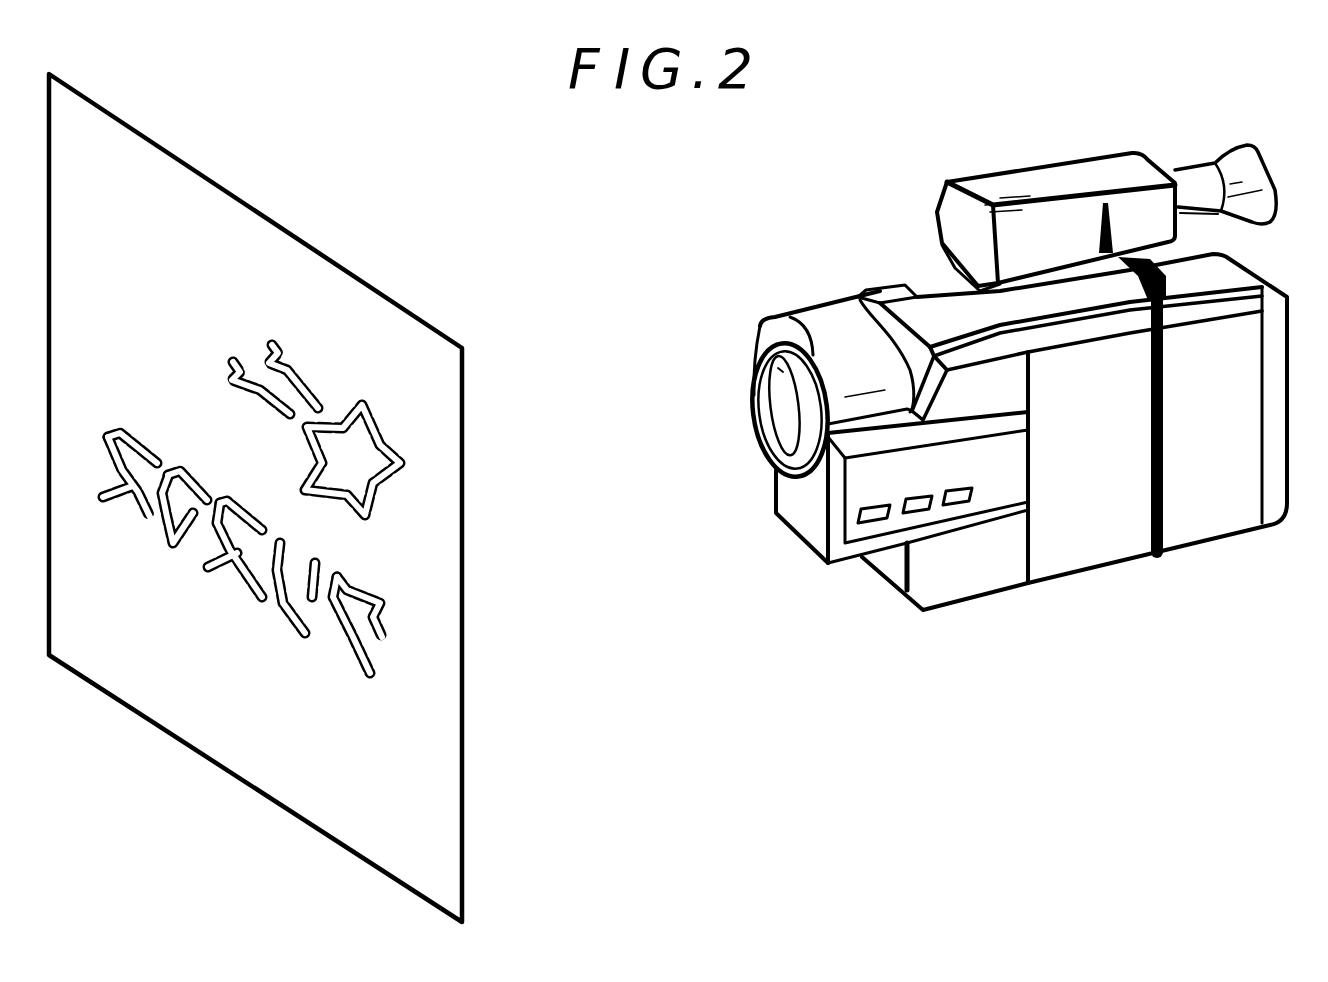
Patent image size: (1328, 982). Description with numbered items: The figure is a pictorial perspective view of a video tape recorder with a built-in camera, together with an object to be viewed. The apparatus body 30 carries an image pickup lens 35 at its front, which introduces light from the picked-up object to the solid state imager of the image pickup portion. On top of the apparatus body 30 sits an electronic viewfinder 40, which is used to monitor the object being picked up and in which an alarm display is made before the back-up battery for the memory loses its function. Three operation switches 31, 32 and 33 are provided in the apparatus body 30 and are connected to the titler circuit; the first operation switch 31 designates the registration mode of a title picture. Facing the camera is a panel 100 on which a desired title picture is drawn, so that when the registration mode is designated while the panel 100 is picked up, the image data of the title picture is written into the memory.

The panel 100 is at (465, 770).
The apparatus body 30 is at (986, 394).
The electronic viewfinder 40 is at (1037, 177).
The image pickup lens 35 is at (805, 408).
The first operation switch 31 is at (870, 527).
The operation switch 32 is at (928, 515).
The operation switch 33 is at (963, 505).